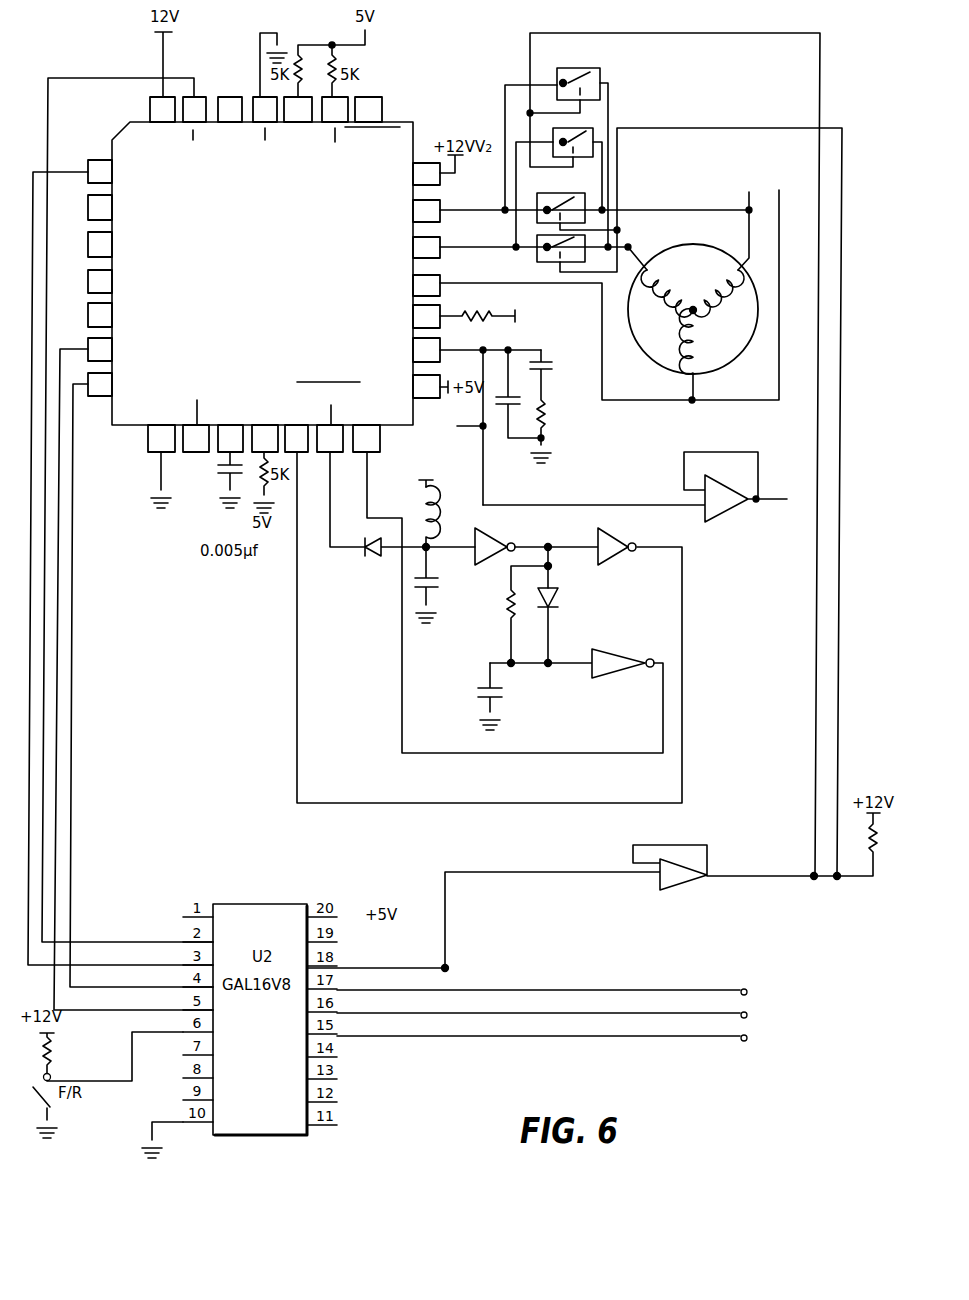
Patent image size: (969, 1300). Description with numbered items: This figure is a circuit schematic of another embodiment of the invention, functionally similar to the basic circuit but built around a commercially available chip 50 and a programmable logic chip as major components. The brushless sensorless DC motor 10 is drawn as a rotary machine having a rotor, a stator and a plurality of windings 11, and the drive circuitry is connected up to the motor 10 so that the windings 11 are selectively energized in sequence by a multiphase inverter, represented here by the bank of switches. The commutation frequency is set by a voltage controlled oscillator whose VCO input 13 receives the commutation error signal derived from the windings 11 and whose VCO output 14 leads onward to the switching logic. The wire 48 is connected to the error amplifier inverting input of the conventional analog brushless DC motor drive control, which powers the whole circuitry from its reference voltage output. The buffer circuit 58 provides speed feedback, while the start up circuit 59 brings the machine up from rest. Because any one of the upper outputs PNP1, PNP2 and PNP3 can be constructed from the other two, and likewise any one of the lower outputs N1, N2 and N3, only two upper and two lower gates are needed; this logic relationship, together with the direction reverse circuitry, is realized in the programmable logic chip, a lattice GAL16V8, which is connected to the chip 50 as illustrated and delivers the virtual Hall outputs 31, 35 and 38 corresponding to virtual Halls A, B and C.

The brushless sensorless DC motor 10 is at (646, 414).
The windings 11 is at (667, 284).
The VCO input 13 is at (468, 350).
The VCO output 14 is at (263, 408).
The virtual Hall output 31 is at (720, 993).
The virtual Hall output 35 is at (735, 1015).
The virtual Hall output 38 is at (722, 1040).
The wire 48 is at (763, 497).
The chip 50 is at (105, 433).
The buffer circuit 58 is at (715, 577).
The start up circuit 59 is at (710, 645).